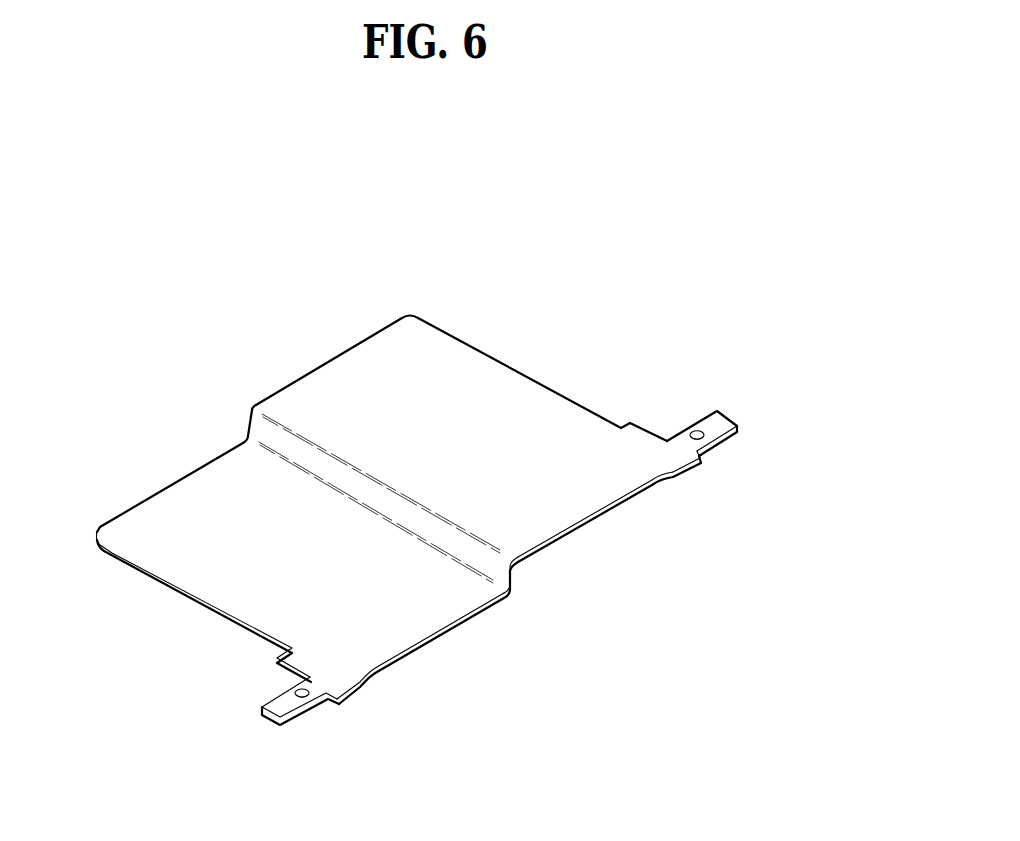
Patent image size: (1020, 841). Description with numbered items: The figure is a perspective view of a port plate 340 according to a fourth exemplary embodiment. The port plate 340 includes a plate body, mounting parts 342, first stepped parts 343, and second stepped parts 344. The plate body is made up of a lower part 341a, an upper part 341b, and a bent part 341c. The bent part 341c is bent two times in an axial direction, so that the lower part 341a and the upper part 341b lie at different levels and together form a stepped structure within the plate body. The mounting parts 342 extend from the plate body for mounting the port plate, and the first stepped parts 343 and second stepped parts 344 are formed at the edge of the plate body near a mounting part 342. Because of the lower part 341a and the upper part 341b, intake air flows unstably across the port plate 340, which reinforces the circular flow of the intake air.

The port plate 340 is at (652, 238).
The lower part 341a is at (210, 581).
The upper part 341b is at (475, 387).
The bent part 341c is at (252, 413).
The mounting part 342 is at (300, 716).
The first stepped part 343 is at (632, 427).
The second stepped part 344 is at (692, 467).